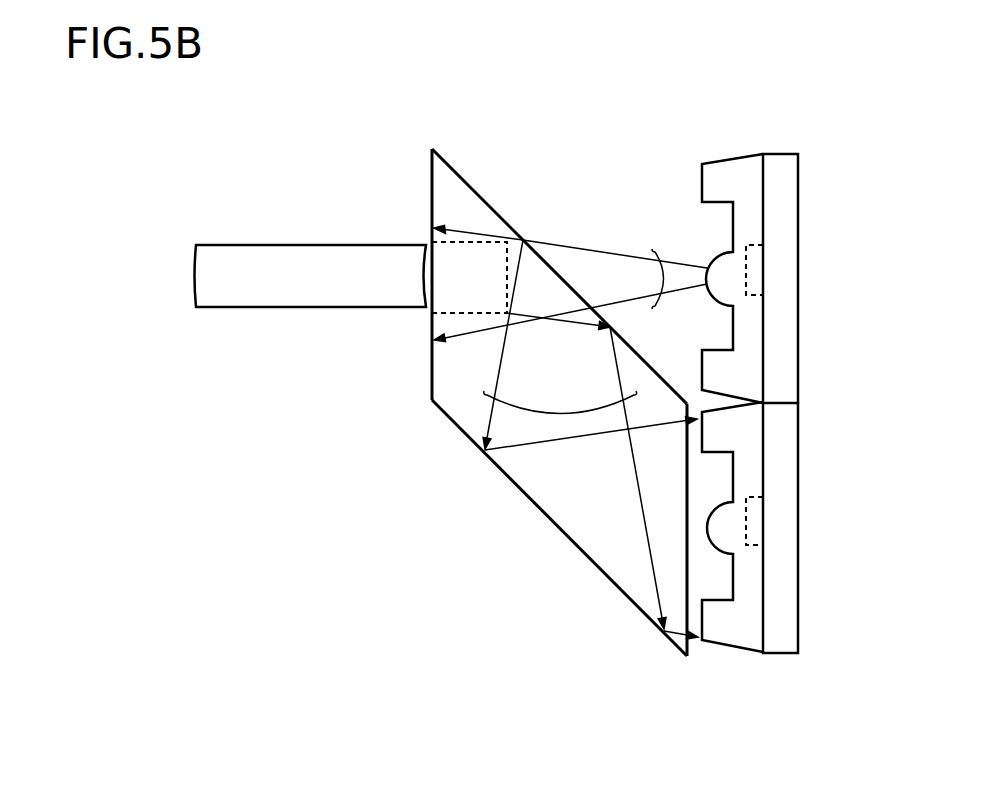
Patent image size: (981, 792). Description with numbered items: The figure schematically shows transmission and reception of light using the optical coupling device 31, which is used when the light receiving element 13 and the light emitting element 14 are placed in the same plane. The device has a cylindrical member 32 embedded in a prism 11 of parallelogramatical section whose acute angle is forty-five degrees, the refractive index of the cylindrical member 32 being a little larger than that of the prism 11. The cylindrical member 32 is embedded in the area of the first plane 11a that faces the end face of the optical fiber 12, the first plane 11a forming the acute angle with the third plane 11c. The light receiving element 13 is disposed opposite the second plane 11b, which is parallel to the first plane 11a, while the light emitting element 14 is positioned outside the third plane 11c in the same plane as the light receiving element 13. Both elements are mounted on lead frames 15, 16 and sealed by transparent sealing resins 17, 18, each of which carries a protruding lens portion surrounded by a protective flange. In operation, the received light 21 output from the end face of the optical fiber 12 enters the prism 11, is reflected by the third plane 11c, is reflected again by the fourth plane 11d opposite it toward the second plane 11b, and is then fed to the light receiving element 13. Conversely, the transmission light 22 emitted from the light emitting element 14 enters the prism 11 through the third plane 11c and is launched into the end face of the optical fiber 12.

The optical coupling device 31 is at (448, 142).
The prism 11 is at (448, 380).
The first plane 11a is at (428, 178).
The second plane 11b is at (690, 560).
The third plane 11c is at (477, 190).
The fourth plane 11d is at (537, 508).
The optical fiber 12 is at (275, 245).
The cylindrical member 32 is at (457, 307).
The received light 21 is at (480, 398).
The transmission light 22 is at (658, 248).
The transparent sealing resin 18 is at (735, 153).
The transparent sealing resin 17 is at (723, 655).
The lead frame 16 is at (777, 152).
The lead frame 15 is at (787, 655).
The light emitting element 14 is at (763, 245).
The light receiving element 13 is at (763, 497).